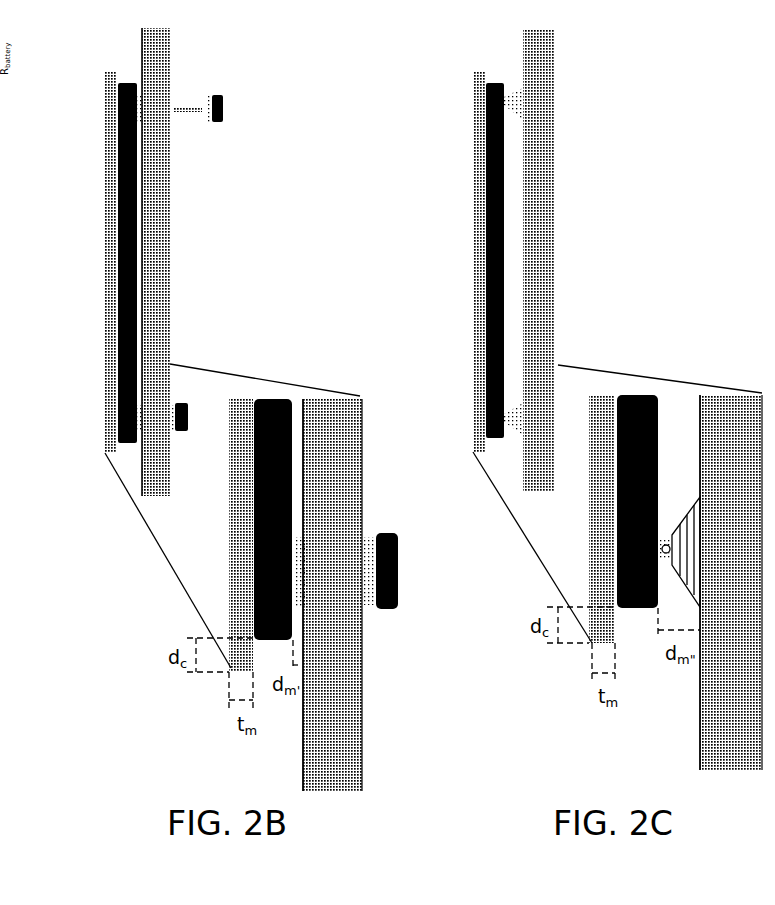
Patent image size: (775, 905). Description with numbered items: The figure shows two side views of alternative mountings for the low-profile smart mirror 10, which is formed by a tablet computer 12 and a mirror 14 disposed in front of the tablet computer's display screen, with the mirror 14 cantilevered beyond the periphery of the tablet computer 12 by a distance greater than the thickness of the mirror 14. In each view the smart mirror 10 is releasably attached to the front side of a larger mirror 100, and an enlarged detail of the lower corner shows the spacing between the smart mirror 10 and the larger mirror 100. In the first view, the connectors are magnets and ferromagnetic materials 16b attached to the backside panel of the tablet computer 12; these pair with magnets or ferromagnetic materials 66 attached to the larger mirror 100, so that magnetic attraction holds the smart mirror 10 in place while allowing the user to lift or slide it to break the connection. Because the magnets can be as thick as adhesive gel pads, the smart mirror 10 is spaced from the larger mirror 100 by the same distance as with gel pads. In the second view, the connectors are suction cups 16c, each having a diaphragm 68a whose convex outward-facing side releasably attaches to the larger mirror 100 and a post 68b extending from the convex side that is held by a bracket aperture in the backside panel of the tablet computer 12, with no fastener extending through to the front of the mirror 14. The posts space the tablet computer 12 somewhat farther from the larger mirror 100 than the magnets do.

In FIG. 2B, the smart mirror 10 is at (100, 190).
In FIG. 2C, the smart mirror 10 is at (460, 128).
In FIG. 2B, the tablet computer 12 is at (127, 411).
In FIG. 2C, the tablet computer 12 is at (486, 237).
In FIG. 2B, the mirror 14 is at (110, 378).
In FIG. 2C, the mirror 14 is at (475, 265).
In FIG. 2B, the magnets and ferromagnetic materials 16b is at (138, 102).
In FIG. 2C, the suction cups 16c is at (487, 380).
In FIG. 2B, the magnets or ferromagnetic materials 66 is at (225, 105).
In FIG. 2C, the diaphragm 68a is at (683, 535).
In FIG. 2C, the post 68b is at (664, 540).
In FIG. 2B, the larger mirror 100 is at (157, 266).
In FIG. 2C, the larger mirror 100 is at (538, 217).